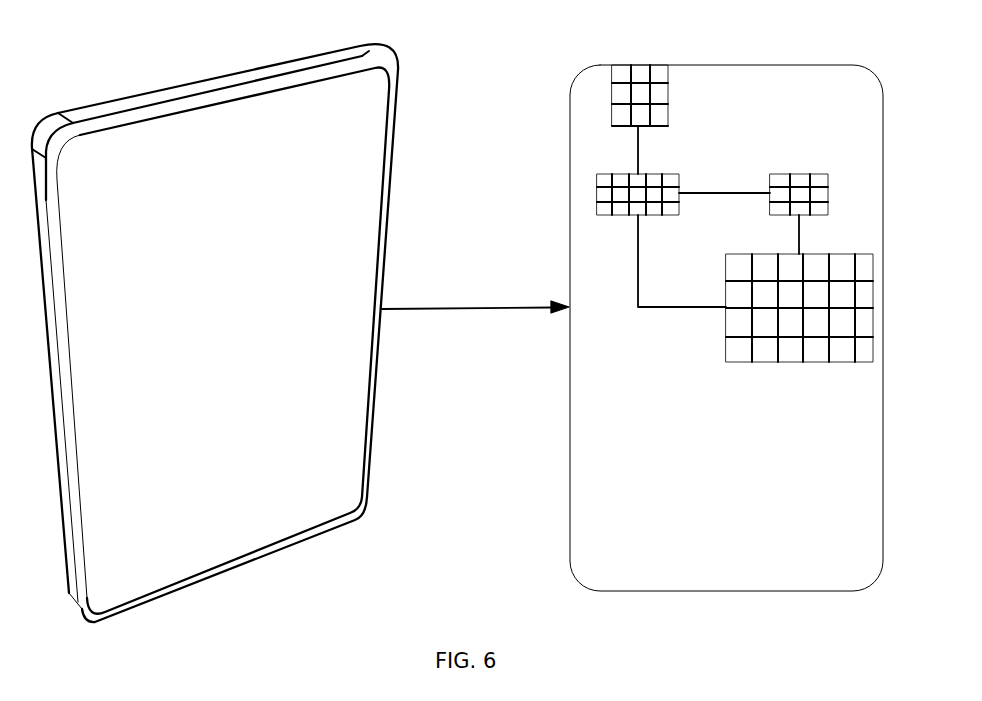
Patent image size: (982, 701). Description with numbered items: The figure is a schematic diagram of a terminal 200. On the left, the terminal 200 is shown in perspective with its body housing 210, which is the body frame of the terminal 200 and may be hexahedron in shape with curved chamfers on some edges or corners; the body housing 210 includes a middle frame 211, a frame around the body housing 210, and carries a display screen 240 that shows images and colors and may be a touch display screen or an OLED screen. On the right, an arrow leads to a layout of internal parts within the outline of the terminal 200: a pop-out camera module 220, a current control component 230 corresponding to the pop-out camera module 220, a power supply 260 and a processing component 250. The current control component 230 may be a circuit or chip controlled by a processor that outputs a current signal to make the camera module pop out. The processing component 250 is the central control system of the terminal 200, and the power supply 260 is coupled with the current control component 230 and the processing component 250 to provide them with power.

The terminal 200 is at (238, 325).
The body housing 210 is at (391, 67).
The middle frame 211 is at (242, 82).
The display screen 240 is at (363, 238).
The pop-out camera module 220 is at (643, 89).
The current control component 230 is at (610, 188).
The power supply 260 is at (818, 200).
The processing component 250 is at (850, 278).